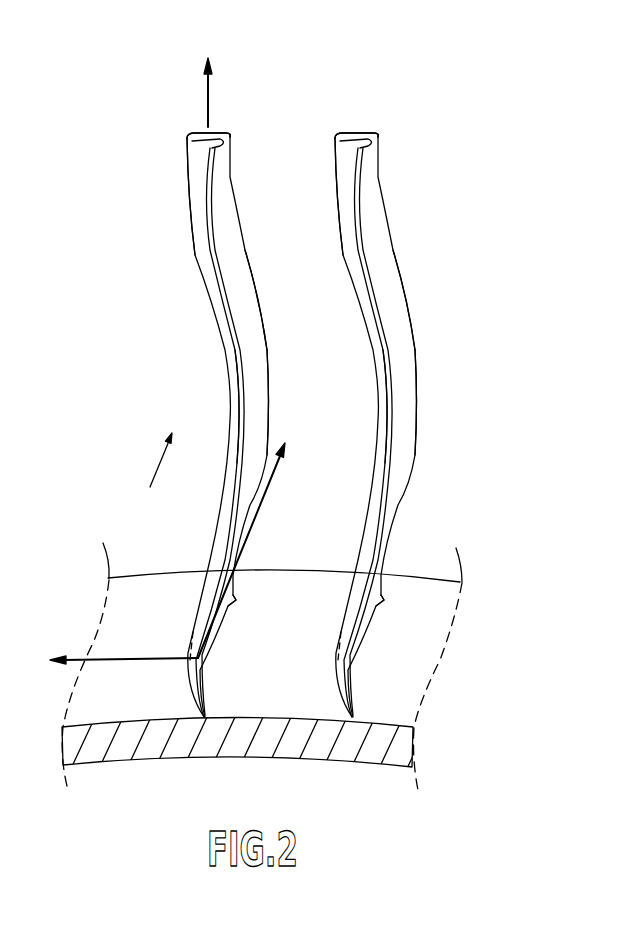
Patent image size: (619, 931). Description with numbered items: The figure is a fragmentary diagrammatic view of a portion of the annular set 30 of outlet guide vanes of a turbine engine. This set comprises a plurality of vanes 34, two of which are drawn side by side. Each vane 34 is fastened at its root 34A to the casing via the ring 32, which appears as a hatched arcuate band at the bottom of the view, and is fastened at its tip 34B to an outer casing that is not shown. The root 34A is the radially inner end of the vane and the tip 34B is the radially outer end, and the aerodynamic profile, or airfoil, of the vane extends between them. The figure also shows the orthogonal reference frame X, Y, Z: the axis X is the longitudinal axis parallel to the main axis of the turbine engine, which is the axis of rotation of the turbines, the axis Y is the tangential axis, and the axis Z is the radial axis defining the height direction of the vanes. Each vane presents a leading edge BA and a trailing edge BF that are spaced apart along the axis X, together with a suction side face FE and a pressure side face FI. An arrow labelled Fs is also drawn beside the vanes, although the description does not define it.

The annular set of OGVs 30 is at (280, 412).
The ring 32 is at (415, 668).
The vane 34 is at (244, 207).
The root 34A is at (227, 597).
The tip 34B is at (193, 138).
The suction side face FE is at (198, 210).
The trailing edge BF is at (253, 280).
The leading edge BA is at (238, 334).
The pressure side face FI is at (257, 358).
The flow direction Fs is at (152, 472).
The longitudinal axis X is at (247, 538).
The tangential axis Y is at (112, 662).
The radial axis Z is at (208, 81).